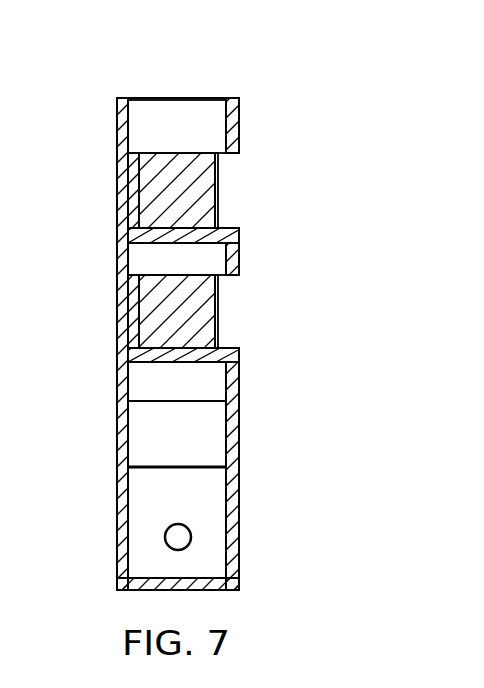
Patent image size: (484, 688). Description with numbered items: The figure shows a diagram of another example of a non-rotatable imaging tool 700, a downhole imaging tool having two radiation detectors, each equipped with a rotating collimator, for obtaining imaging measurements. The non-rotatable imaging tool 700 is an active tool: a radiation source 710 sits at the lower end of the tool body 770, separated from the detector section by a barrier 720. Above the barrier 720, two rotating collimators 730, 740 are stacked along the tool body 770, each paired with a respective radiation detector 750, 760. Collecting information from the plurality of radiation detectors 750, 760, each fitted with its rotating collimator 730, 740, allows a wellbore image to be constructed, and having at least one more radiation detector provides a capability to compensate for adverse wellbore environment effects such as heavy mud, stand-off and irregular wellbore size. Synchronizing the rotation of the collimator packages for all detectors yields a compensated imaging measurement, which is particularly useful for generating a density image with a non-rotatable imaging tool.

The non-rotatable imaging tool 700 is at (95, 66).
The radiation source 710 is at (164, 537).
The barrier 720 is at (138, 438).
The rotating collimator 730 is at (259, 326).
The rotating collimator 740 is at (259, 208).
The radiation detector 750 is at (205, 292).
The radiation detector 760 is at (205, 176).
The tool body 770 is at (118, 118).